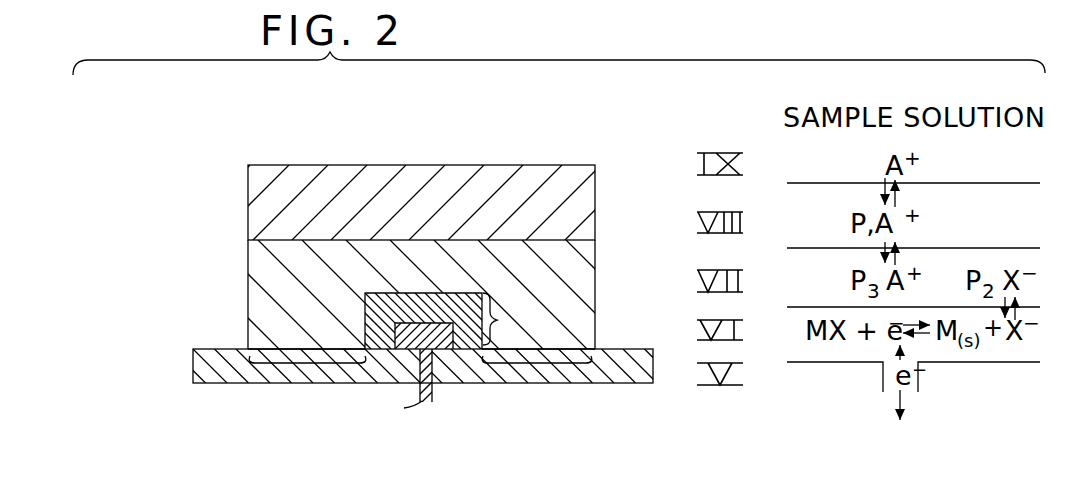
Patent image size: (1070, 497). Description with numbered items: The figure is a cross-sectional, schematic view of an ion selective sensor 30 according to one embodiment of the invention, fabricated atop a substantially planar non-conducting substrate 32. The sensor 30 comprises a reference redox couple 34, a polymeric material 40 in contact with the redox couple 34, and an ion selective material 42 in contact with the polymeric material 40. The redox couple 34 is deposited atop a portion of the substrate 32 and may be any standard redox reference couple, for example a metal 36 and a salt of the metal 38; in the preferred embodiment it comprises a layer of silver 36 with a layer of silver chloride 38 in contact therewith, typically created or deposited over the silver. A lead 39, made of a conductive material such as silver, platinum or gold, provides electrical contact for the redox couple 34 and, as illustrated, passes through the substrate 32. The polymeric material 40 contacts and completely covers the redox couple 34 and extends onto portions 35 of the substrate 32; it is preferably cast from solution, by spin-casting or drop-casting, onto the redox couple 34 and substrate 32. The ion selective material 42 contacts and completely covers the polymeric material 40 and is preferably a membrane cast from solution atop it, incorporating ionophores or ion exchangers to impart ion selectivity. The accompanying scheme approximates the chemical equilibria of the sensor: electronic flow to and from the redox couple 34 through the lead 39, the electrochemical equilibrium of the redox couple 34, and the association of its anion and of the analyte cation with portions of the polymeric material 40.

The ion selective sensor 30 is at (158, 131).
The non-conducting substrate 32 is at (635, 367).
The reference redox couple 34 is at (500, 320).
The portions of substrate 35 is at (307, 372).
The metal layer 36 is at (405, 342).
The metal salt layer 38 is at (378, 343).
The lead 39 is at (430, 400).
The polymeric material 40 is at (258, 285).
The ion selective material 42 is at (257, 190).